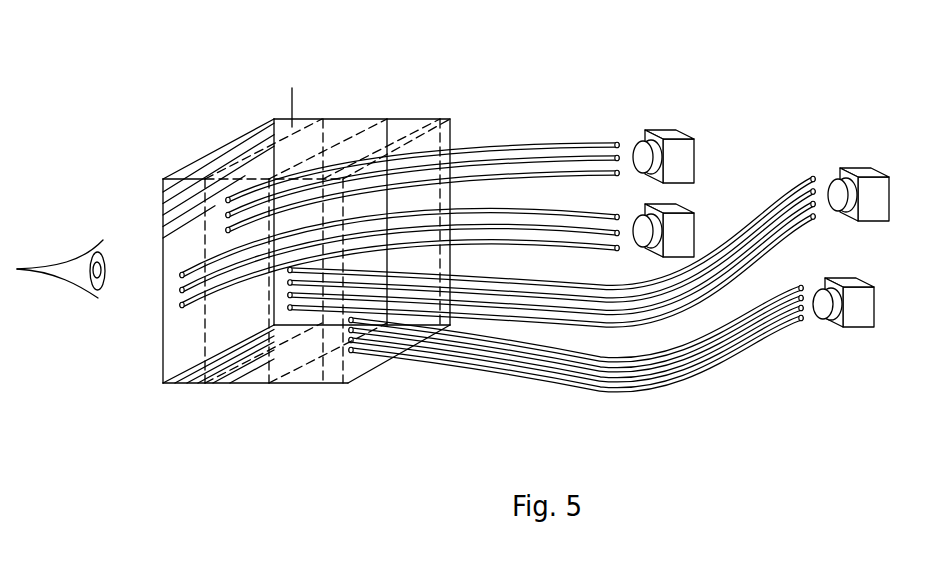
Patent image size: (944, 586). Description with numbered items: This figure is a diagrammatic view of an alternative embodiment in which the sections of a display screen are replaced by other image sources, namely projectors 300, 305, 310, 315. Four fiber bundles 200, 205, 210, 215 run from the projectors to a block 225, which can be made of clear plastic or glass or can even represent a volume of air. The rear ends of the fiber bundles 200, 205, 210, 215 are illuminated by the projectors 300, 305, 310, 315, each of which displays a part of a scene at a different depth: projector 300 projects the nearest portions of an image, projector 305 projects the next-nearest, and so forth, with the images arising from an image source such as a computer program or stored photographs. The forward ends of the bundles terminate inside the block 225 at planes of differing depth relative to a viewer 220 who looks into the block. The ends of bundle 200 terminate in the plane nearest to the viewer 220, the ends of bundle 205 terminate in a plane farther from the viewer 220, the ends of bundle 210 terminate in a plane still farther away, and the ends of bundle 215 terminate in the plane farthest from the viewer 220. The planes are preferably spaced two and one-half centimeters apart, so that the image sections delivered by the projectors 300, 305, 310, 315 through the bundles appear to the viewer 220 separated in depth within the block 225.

The fiber bundle 200 is at (182, 272).
The fiber bundle 205 is at (229, 182).
The fiber bundle 210 is at (291, 267).
The fiber bundle 215 is at (349, 317).
The viewer 220 is at (67, 264).
The block 225 is at (163, 352).
The projector 300 is at (694, 230).
The projector 305 is at (694, 143).
The projector 310 is at (858, 168).
The projector 315 is at (855, 327).